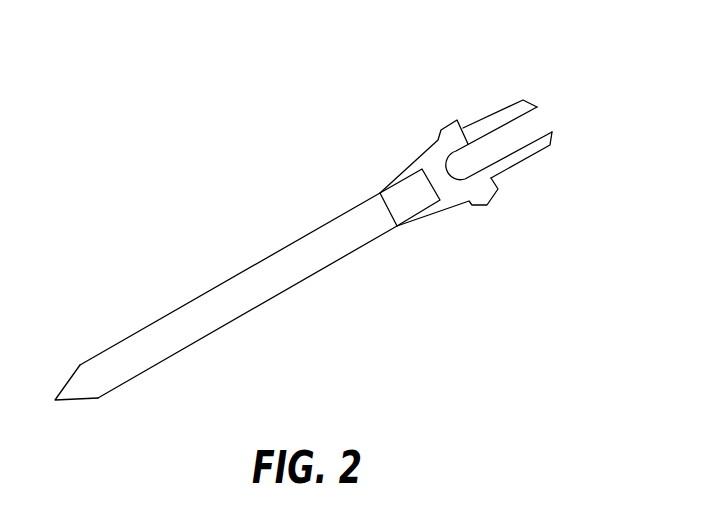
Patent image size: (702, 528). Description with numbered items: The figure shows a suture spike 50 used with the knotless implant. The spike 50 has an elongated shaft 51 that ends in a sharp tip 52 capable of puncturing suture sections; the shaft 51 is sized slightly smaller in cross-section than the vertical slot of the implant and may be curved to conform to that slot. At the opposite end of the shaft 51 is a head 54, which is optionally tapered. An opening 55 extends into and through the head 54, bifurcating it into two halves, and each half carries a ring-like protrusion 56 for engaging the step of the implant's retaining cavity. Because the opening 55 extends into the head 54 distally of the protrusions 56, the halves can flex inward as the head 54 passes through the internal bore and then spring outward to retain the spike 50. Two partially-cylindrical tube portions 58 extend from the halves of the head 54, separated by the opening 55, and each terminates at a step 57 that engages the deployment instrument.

The spike 50 is at (312, 255).
The shaft 51 is at (235, 302).
The sharp tip 52 is at (74, 400).
The head 54 is at (409, 166).
The opening 55 is at (527, 131).
The ring-like protrusion 56 is at (452, 133).
The step 57 is at (463, 128).
The partially-cylindrical tube portion 58 is at (522, 168).